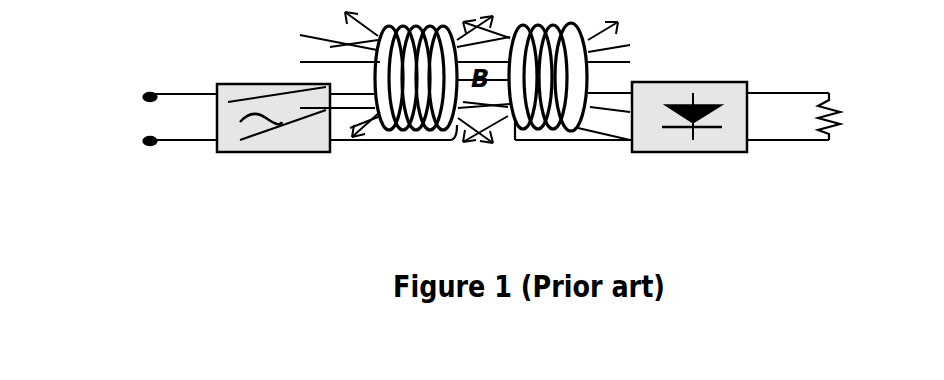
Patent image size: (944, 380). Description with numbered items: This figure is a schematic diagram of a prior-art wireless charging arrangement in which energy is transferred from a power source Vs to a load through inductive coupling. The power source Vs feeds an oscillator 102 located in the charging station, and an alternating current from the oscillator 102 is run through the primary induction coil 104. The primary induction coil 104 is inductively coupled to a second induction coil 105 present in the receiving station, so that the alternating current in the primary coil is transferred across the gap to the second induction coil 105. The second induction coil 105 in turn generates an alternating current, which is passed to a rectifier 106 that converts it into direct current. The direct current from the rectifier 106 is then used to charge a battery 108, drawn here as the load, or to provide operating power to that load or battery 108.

The power source Vs is at (148, 119).
The oscillator 102 is at (287, 154).
The primary induction coil 104 is at (430, 145).
The second induction coil 105 is at (561, 144).
The rectifier 106 is at (701, 152).
The load or battery 108 is at (830, 140).